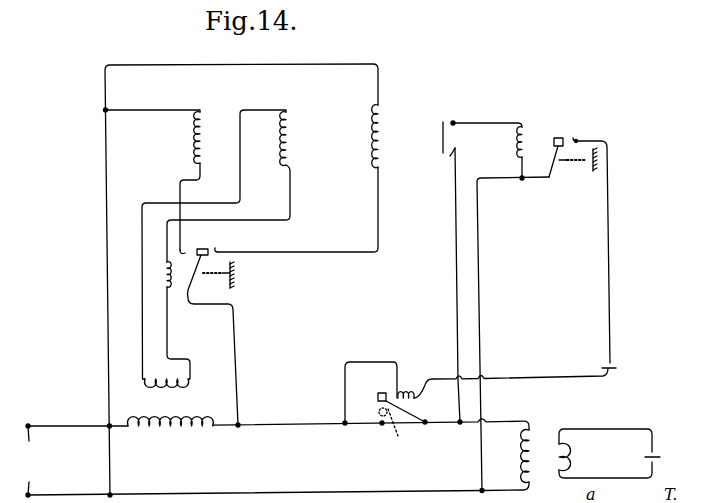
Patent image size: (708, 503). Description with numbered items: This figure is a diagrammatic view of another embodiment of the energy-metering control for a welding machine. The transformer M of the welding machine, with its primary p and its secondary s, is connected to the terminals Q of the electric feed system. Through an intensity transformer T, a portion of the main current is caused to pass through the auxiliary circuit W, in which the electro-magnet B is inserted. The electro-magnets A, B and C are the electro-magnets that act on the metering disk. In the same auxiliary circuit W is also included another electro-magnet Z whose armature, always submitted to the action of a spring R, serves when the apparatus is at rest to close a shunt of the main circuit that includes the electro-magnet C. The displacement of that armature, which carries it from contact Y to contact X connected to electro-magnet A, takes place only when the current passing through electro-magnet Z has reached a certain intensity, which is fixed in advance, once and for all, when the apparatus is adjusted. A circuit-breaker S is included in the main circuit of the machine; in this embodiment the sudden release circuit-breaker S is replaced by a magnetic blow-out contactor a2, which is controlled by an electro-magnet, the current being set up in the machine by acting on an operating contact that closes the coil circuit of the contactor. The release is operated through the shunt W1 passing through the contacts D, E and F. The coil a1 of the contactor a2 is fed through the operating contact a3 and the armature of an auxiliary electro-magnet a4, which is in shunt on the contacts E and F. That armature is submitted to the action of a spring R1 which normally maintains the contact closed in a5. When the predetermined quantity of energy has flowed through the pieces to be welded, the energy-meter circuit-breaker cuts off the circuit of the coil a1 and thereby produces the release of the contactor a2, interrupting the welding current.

The electro-magnet A is at (200, 112).
The electro-magnet B is at (286, 110).
The electro-magnet C is at (380, 105).
The contact D is at (442, 137).
The contact E is at (454, 120).
The contact F is at (448, 286).
The contact X is at (187, 241).
The contact Y is at (219, 240).
The electro-magnet Z is at (165, 271).
The spring R is at (228, 278).
The auxiliary circuit W is at (142, 312).
The intensity transformer T is at (170, 436).
The terminals Q is at (31, 460).
The circuit-breaker S is at (381, 375).
The coil a1 is at (406, 390).
The contactor a2 is at (399, 418).
The operating contact a3 is at (611, 362).
The auxiliary electro-magnet a4 is at (517, 150).
The contact a5 is at (587, 128).
The spring R1 is at (590, 166).
The shunt W1 is at (480, 316).
The primary p is at (518, 462).
The secondary s is at (576, 453).
The transformer M is at (548, 493).